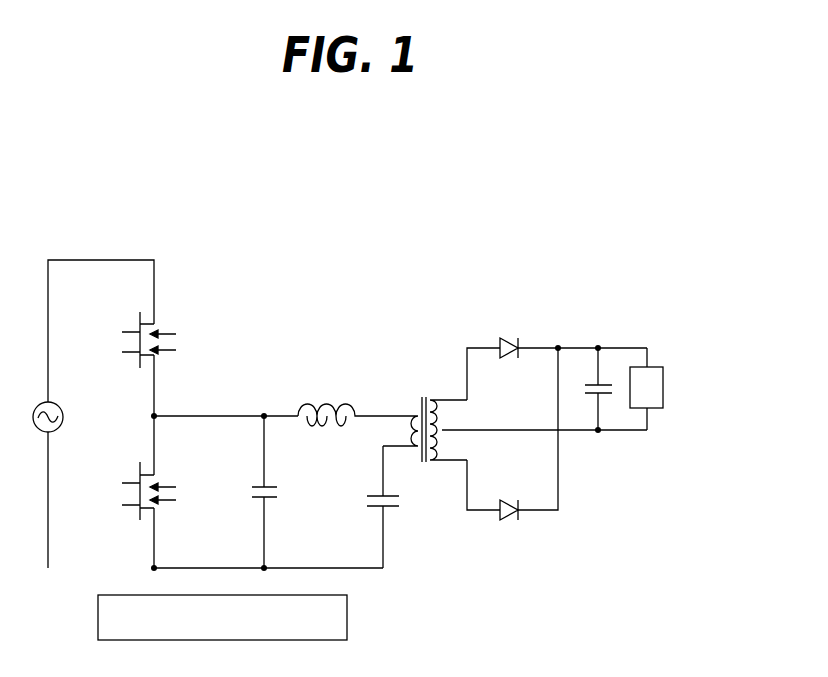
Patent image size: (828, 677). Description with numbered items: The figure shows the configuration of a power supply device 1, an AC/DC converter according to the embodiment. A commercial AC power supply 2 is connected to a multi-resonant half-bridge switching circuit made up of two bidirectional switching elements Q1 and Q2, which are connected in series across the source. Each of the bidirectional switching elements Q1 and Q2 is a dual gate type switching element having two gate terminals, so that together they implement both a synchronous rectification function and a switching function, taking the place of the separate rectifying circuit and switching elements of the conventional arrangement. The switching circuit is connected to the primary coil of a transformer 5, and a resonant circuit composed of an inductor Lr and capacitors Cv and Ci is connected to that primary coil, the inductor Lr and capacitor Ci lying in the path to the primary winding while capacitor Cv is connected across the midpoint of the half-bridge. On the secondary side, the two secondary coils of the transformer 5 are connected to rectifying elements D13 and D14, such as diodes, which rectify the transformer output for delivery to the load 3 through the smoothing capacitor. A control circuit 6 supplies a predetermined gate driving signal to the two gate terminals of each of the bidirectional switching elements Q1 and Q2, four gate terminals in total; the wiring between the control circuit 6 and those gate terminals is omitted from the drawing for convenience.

The power supply device 1 is at (330, 237).
The commercial power supply 2 is at (39, 405).
The load 3 is at (663, 390).
The transformer 5 is at (432, 500).
The control circuit 6 is at (347, 608).
The bidirectional switching element Q1 is at (131, 335).
The bidirectional switching element Q2 is at (130, 486).
The inductor Lr is at (355, 397).
The capacitor Cv is at (247, 492).
The capacitor Ci is at (367, 507).
The rectifying element D13 is at (510, 332).
The rectifying element D14 is at (512, 526).